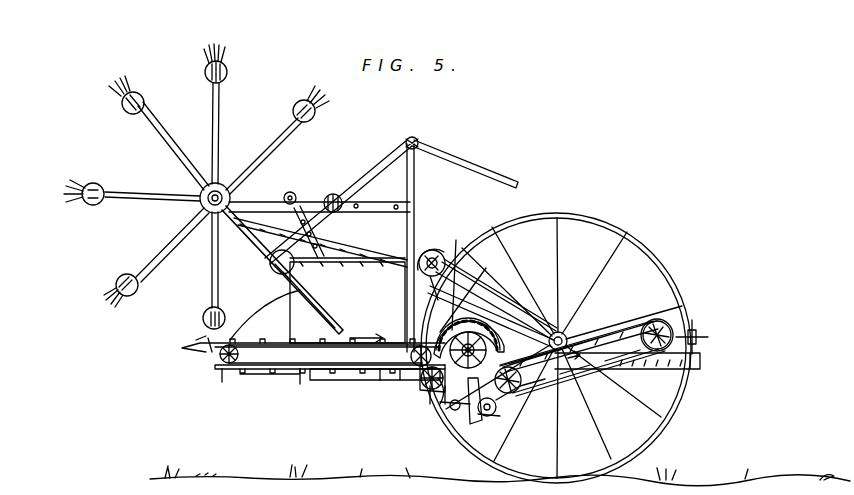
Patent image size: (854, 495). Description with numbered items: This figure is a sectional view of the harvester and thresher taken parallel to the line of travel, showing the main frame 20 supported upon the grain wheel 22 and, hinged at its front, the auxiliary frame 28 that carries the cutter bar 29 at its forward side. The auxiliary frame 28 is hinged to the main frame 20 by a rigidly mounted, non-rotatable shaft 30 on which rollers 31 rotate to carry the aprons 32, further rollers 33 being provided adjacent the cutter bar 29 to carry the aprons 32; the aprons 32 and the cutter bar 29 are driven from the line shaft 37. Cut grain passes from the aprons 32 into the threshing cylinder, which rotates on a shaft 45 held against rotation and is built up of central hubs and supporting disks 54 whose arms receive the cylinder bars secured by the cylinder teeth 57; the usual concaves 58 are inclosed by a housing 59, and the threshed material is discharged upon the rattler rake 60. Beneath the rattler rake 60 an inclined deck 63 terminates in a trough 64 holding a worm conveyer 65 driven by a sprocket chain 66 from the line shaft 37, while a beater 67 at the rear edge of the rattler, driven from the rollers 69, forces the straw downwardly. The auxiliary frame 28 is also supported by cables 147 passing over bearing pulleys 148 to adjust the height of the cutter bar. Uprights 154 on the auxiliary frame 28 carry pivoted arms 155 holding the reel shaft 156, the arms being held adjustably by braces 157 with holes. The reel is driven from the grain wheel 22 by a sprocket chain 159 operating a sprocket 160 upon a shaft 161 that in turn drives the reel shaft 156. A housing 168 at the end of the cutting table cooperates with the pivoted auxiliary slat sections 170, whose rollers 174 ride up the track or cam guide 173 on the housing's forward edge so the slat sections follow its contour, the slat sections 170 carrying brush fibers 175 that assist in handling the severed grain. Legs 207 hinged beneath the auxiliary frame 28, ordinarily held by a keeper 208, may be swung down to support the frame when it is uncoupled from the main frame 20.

The main frame 20 is at (694, 376).
The grain wheel 22 is at (660, 438).
The auxiliary frame 28 is at (226, 366).
The cutter bar 29 is at (200, 357).
The shaft 30 is at (418, 380).
The rollers 31 is at (372, 370).
The aprons 32 is at (290, 366).
The rollers 33 is at (248, 372).
The line shaft 37 is at (434, 400).
The shaft 45 is at (506, 320).
The central hubs and supporting disks 54 is at (555, 320).
The cylinder teeth 57 is at (474, 300).
The concaves 58 is at (448, 410).
The housing 59 is at (458, 280).
The rattler rake 60 is at (604, 335).
The inclined deck 63 is at (266, 195).
The trough 64 is at (496, 414).
The worm conveyer 65 is at (478, 420).
The sprocket chain 66 is at (468, 432).
The beater 67 is at (700, 332).
The rollers 69 is at (673, 323).
The cables 147 is at (476, 162).
The bearing pulleys 148 is at (420, 142).
The uprights 154 is at (404, 200).
The arms 155 is at (368, 195).
The reel shaft 156 is at (199, 205).
The braces 157 is at (330, 236).
The sprocket chain 159 is at (505, 290).
The sprocket 160 is at (436, 250).
The shaft 161 is at (440, 258).
The housing 168 is at (286, 310).
The auxiliary slat sections 170 is at (136, 114).
The track or cam guide 173 is at (203, 314).
The rollers 174 is at (228, 72).
The brush fibers 175 is at (86, 188).
The legs 207 is at (268, 372).
The keeper 208 is at (318, 383).